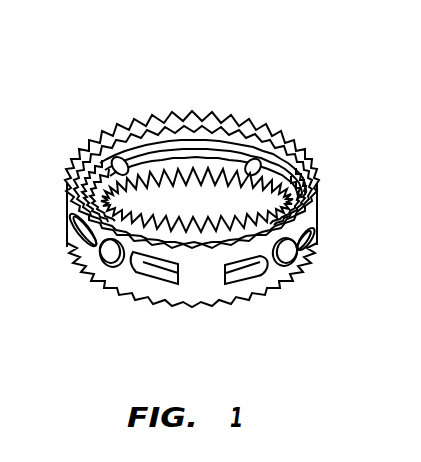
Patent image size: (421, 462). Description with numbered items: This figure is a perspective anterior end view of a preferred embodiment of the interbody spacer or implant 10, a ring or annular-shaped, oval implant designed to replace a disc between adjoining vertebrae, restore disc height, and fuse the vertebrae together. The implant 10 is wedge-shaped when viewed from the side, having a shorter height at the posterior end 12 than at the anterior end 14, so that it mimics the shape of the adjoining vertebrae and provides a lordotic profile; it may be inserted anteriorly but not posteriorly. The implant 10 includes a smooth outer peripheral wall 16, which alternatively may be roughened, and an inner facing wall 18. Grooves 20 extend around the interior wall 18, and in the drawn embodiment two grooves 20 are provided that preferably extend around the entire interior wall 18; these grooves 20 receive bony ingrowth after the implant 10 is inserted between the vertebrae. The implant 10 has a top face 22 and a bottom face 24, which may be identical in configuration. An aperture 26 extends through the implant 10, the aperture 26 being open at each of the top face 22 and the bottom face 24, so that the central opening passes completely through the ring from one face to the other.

The interbody spacer 10 is at (247, 84).
The posterior end 12 is at (287, 139).
The anterior end 14 is at (84, 252).
The outer peripheral wall 16 is at (205, 278).
The inner facing wall 18 is at (171, 110).
The grooves 20 is at (236, 152).
The top face 22 is at (99, 131).
The bottom face 24 is at (233, 304).
The aperture 26 is at (199, 209).